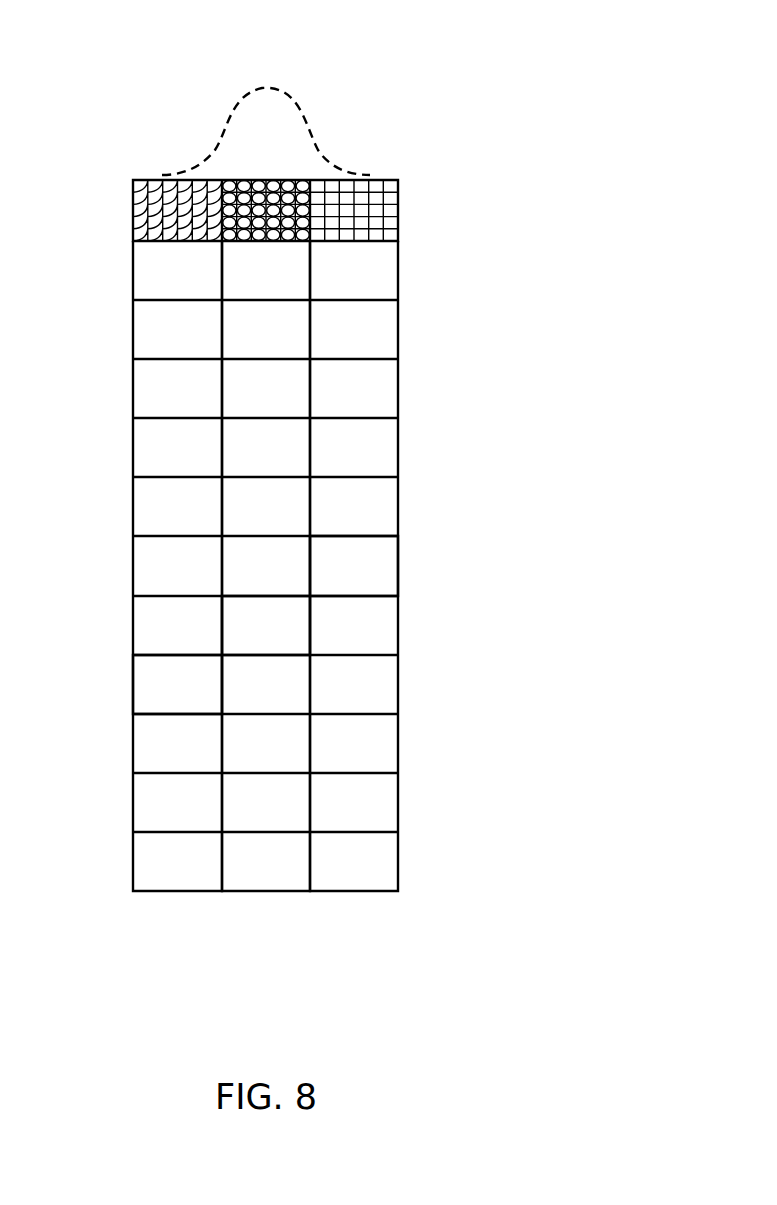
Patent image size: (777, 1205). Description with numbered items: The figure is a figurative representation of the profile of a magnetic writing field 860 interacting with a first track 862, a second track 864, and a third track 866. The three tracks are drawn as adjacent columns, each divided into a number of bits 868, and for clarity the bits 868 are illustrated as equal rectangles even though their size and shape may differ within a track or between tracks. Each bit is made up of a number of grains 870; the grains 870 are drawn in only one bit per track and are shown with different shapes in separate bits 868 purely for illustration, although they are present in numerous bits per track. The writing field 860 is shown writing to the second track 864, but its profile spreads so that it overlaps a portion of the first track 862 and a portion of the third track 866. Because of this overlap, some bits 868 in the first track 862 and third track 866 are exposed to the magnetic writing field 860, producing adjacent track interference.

The magnetic writing field 860 is at (267, 87).
The first track 862 is at (163, 920).
The second track 864 is at (266, 920).
The third track 866 is at (370, 920).
The bits 868 is at (353, 564).
The grains 870 is at (148, 190).